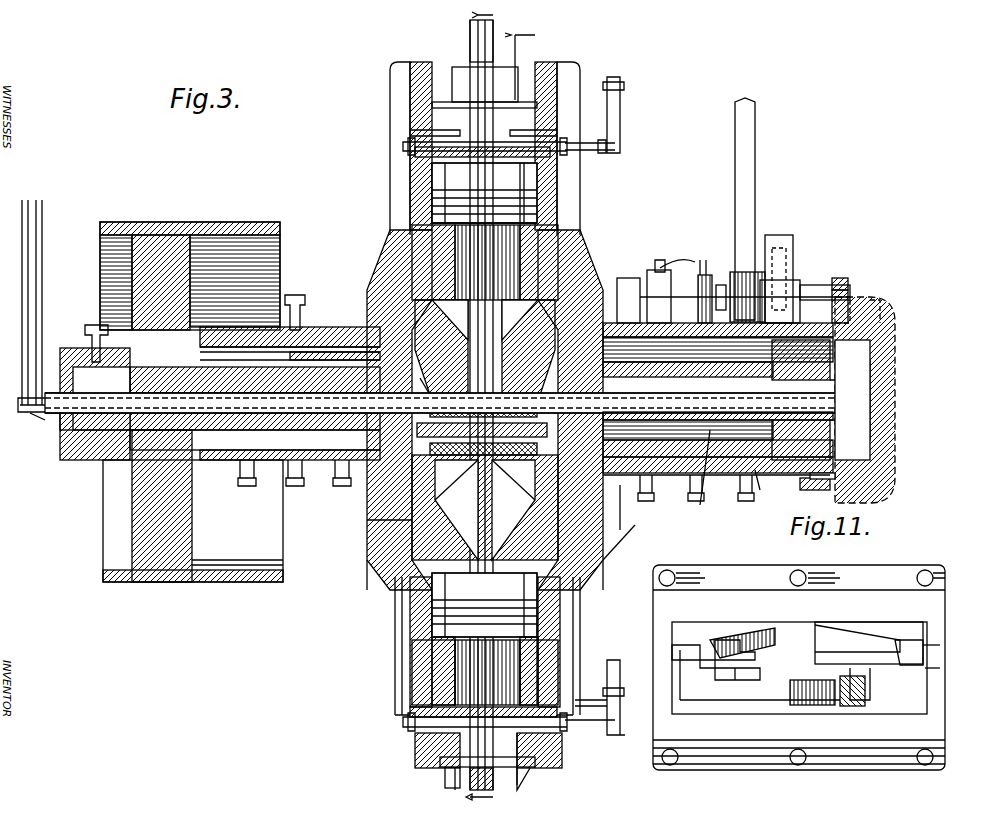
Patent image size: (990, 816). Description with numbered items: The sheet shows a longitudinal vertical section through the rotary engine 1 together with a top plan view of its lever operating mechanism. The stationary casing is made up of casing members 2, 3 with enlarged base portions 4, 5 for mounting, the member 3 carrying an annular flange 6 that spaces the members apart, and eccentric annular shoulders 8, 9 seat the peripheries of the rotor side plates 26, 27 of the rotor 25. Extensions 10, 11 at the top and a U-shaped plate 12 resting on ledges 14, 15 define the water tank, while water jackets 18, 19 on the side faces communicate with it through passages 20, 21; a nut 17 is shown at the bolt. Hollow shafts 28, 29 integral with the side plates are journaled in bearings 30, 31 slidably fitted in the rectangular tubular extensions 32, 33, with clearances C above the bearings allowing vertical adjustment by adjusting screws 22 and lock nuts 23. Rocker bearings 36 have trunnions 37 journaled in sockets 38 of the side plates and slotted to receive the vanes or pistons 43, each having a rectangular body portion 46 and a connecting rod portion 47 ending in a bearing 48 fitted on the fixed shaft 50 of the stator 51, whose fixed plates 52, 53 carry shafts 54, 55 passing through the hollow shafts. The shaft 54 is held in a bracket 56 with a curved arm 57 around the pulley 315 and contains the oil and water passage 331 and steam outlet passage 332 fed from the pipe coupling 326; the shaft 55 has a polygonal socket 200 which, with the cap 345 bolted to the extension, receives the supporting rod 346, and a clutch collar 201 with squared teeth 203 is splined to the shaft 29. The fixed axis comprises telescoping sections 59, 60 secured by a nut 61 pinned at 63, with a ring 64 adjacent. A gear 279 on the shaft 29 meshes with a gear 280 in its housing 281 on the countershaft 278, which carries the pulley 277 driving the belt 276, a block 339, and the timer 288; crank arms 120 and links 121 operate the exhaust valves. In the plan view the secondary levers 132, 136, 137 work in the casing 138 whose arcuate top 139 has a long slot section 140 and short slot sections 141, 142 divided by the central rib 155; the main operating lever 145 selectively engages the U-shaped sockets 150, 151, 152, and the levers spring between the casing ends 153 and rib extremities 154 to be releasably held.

In FIG. 3, the engine 1 is at (585, 222).
In FIG. 3, the casing member 2 is at (410, 668).
In FIG. 3, the casing member 3 is at (605, 520).
In FIG. 3, the base portion 4 is at (365, 750).
In FIG. 3, the base portion 5 is at (590, 748).
In FIG. 3, the annular flange 6 is at (405, 692).
In FIG. 3, the annular shoulder 8 is at (435, 635).
In FIG. 3, the annular shoulder 9 is at (560, 650).
In FIG. 3, the extension 10 is at (420, 62).
In FIG. 3, the extension 11 is at (560, 62).
In FIG. 3, the U-shaped wall or plate 12 is at (461, 779).
In FIG. 3, the ledge 14 is at (440, 762).
In FIG. 3, the ledge 15 is at (535, 760).
In FIG. 3, the nut 17 is at (602, 139).
In FIG. 3, the water jacket 18 is at (395, 597).
In FIG. 3, the water jacket 19 is at (578, 607).
In FIG. 3, the passage 20 is at (420, 108).
In FIG. 3, the passage 21 is at (585, 85).
In FIG. 3, the adjusting screw 22 is at (290, 488).
In FIG. 3, the lock nut 23 is at (240, 482).
In FIG. 3, the rotor 25 is at (600, 270).
In FIG. 3, the side plate 26 is at (370, 300).
In FIG. 3, the side plate 27 is at (600, 295).
In FIG. 3, the hollow shaft 28 is at (318, 470).
In FIG. 3, the hollow shaft 29 is at (701, 471).
In FIG. 3, the bearing 30 is at (40, 400).
In FIG. 3, the bearing 31 is at (757, 488).
In FIG. 3, the tubular extension 32 is at (330, 470).
In FIG. 3, the tubular extension 33 is at (780, 470).
In FIG. 3, the rocker bearing 36 is at (484, 193).
In FIG. 3, the trunnion 37 is at (440, 158).
In FIG. 3, the socket 38 is at (430, 188).
In FIG. 3, the vane or piston 43 is at (487, 405).
In FIG. 3, the body portion 46 is at (362, 573).
In FIG. 3, the connecting rod portion 47 is at (485, 413).
In FIG. 3, the bearing 48 is at (485, 507).
In FIG. 3, the fixed shaft or axis 50 is at (603, 495).
In FIG. 3, the stator 51 is at (628, 300).
In FIG. 3, the fixed plate 52 is at (375, 530).
In FIG. 3, the fixed plate 53 is at (624, 542).
In FIG. 3, the shaft 54 is at (70, 460).
In FIG. 3, the shaft 55 is at (660, 530).
In FIG. 3, the bracket 56 is at (95, 455).
In FIG. 3, the curved arm 57 is at (537, 172).
In FIG. 3, the telescoping section 59 is at (500, 430).
In FIG. 3, the telescoping section 60 is at (513, 486).
In FIG. 3, the nut 61 is at (456, 480).
In FIG. 3, the pin 63 is at (483, 414).
In FIG. 3, the hub ring 64 is at (419, 381).
In FIG. 3, the crank arm 120 is at (593, 688).
In FIG. 3, the link 121 is at (613, 660).
In FIG. 11, the secondary lever 132 is at (820, 705).
In FIG. 11, the secondary lever 136 is at (693, 640).
In FIG. 11, the secondary lever 137 is at (902, 640).
In FIG. 11, the casing 138 is at (895, 568).
In FIG. 11, the arcuate top 139 is at (928, 607).
In FIG. 11, the long slot section 140 is at (762, 708).
In FIG. 11, the short slot section 141 is at (860, 622).
In FIG. 11, the short slot section 142 is at (745, 625).
In FIG. 11, the selective or main operating lever 145 is at (868, 702).
In FIG. 11, the U-shaped socket 150 is at (870, 690).
In FIG. 11, the U-shaped socket 151 is at (697, 677).
In FIG. 11, the U-shaped socket 152 is at (928, 658).
In FIG. 11, the end 153 is at (935, 676).
In FIG. 11, the extremity 154 is at (735, 686).
In FIG. 11, the central dividing rib 155 is at (756, 667).
In FIG. 3, the polygonal socket 200 is at (700, 335).
In FIG. 3, the clutch collar 201 is at (872, 318).
In FIG. 3, the teeth 203 is at (880, 398).
In FIG. 3, the belt 276 is at (748, 152).
In FIG. 3, the pulley 277 is at (738, 270).
In FIG. 3, the countershaft 278 is at (810, 285).
In FIG. 3, the gear 279 is at (850, 297).
In FIG. 3, the gear 280 is at (793, 240).
In FIG. 3, the housing 281 is at (777, 245).
In FIG. 3, the commutator or timer 288 is at (705, 265).
In FIG. 3, the pulley 315 is at (168, 232).
In FIG. 3, the coupling 326 is at (35, 411).
In FIG. 3, the longitudinal passage 331 is at (122, 440).
In FIG. 3, the outlet passage 332 is at (312, 340).
In FIG. 3, the block 339 is at (845, 278).
In FIG. 3, the cap 345 is at (898, 348).
In FIG. 3, the rod 346 is at (880, 380).
In FIG. 3, the clearance C is at (665, 300).